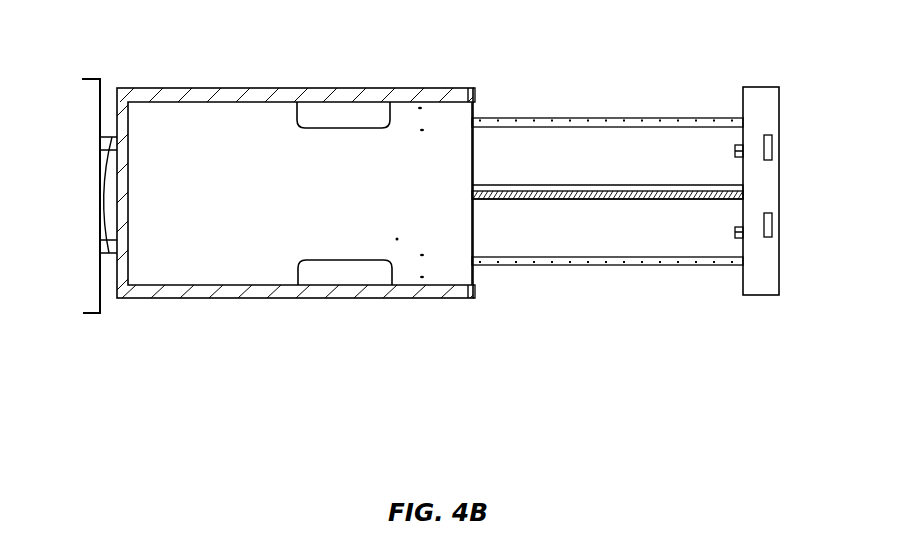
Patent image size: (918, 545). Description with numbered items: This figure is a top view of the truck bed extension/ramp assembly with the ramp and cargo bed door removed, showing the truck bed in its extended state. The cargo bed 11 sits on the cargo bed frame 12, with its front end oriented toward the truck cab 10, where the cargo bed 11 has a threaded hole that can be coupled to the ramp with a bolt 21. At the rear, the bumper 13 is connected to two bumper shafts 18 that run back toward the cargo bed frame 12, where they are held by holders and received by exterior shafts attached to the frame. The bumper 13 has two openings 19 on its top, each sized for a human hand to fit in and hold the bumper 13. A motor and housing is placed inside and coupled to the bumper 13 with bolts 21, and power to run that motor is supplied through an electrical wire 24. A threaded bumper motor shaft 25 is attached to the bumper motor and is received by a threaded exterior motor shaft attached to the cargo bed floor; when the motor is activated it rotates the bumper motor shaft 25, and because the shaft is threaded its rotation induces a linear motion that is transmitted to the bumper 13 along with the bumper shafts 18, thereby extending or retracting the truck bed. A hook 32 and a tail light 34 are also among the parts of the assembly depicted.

The truck cab 10 is at (89, 78).
The cargo bed 11 is at (259, 81).
The cargo bed frame 12 is at (108, 255).
The bumper 13 is at (762, 297).
The bumper shaft 18 is at (575, 118).
The opening 19 is at (768, 145).
The bolt 21 is at (397, 140).
The electrical wire 24 is at (110, 173).
The bumper motor shaft 25 is at (612, 200).
The hook 32 is at (421, 107).
The tail light 34 is at (474, 88).